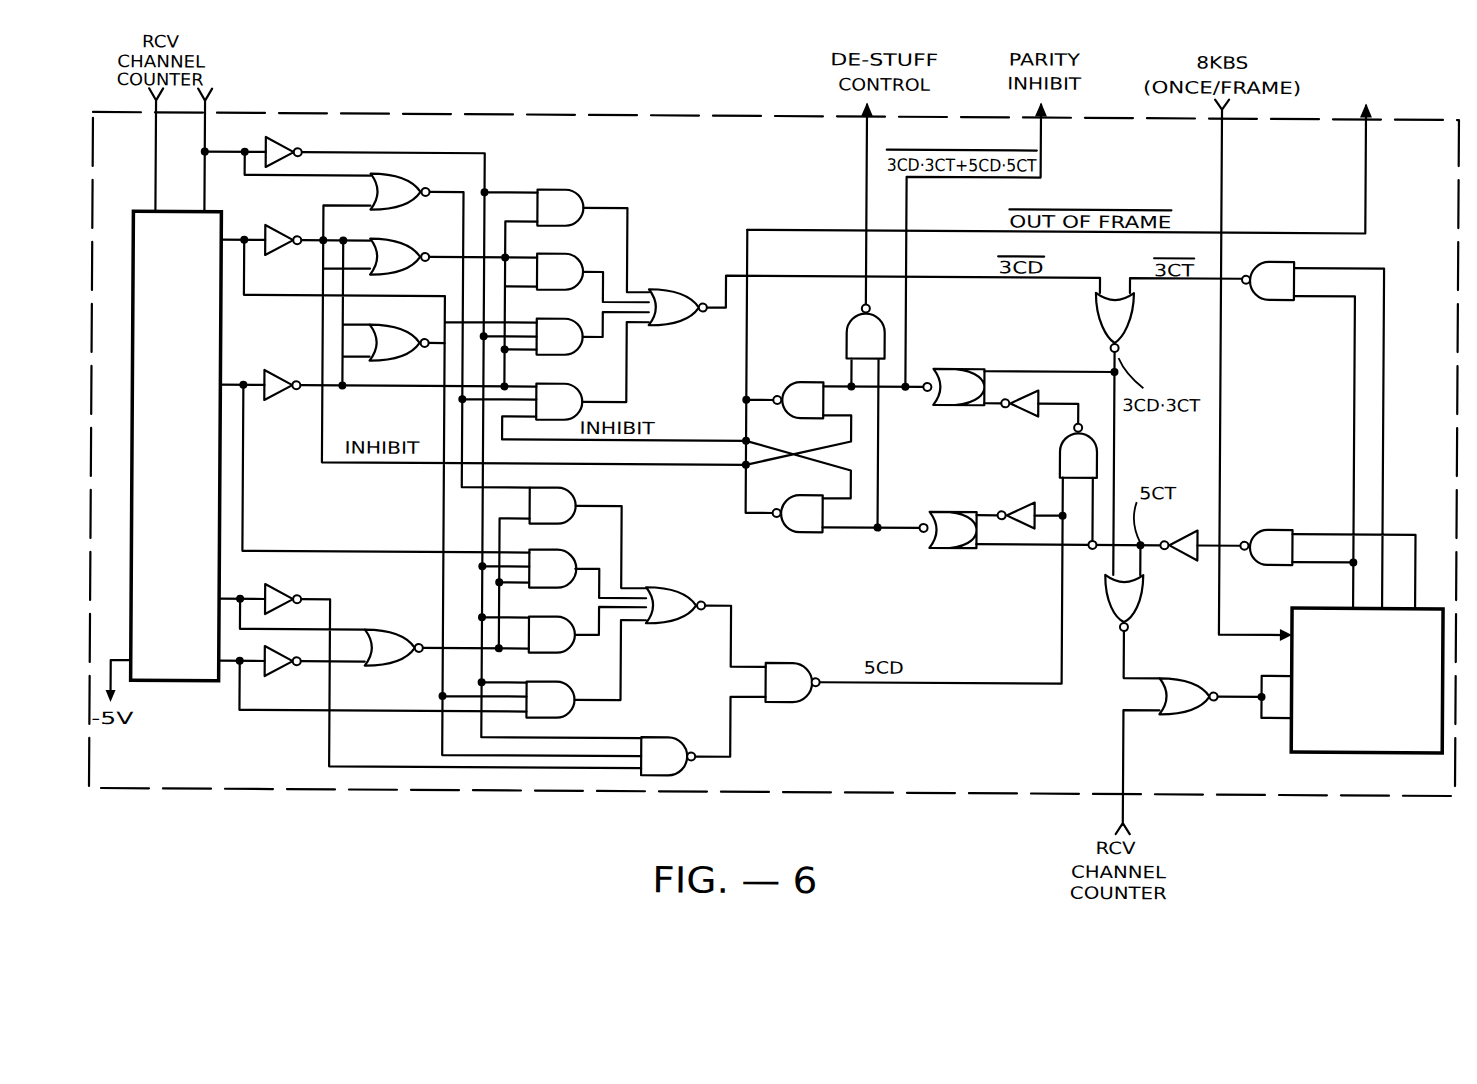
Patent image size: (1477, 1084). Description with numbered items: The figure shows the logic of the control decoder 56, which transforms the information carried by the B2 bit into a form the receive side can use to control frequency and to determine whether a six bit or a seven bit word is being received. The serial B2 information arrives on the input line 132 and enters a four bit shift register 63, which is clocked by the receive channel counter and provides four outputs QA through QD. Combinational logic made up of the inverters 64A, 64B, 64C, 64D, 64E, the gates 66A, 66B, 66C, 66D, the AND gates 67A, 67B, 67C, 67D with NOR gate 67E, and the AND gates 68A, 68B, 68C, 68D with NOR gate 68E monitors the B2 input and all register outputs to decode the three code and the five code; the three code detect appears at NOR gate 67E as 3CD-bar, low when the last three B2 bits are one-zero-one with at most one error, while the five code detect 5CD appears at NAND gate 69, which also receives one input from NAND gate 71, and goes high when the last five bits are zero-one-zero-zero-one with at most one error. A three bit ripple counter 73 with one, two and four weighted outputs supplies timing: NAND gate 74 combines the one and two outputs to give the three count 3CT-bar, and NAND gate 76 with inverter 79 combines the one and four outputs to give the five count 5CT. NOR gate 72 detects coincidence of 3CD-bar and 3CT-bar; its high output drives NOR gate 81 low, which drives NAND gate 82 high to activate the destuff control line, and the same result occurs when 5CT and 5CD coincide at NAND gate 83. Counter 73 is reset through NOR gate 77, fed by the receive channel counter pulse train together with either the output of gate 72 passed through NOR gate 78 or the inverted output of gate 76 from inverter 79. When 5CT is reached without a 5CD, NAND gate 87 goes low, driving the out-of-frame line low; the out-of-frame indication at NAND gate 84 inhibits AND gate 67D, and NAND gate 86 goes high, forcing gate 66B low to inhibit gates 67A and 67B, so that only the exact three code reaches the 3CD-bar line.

The control decoder 56 is at (348, 791).
The four bit shift register 63 is at (183, 684).
The receive channel counter input line 132 is at (205, 129).
The combinational logic inverter 64A is at (279, 138).
The combinational logic inverter 64B is at (270, 228).
The combinational logic inverter 64C is at (270, 372).
The combinational logic inverter 64D is at (275, 579).
The combinational logic inverter 64E is at (272, 678).
The combinational logic gate 66A is at (410, 183).
The combinational logic gate 66B is at (400, 241).
The combinational logic gate 66C is at (385, 327).
The combinational logic gate 66D is at (385, 632).
The AND gate 67A is at (548, 189).
The AND gate 67B is at (553, 254).
The AND gate 67C is at (568, 324).
The AND gate 67D is at (553, 384).
The NOR gate 67E is at (660, 290).
The AND gate 68A is at (563, 488).
The AND gate 68B is at (562, 551).
The AND gate 68C is at (548, 618).
The AND gate 68D is at (547, 683).
The NOR gate 68E is at (690, 587).
The NAND gate 69 is at (777, 663).
The NAND gate 71 is at (681, 738).
The NOR gate 72 is at (1134, 313).
The three bit ripple counter 73 is at (1358, 750).
The NAND gate 74 is at (1275, 298).
The NAND gate 76 is at (1295, 527).
The NOR gate 77 is at (1200, 674).
The NOR gate 78 is at (1108, 608).
The inverter 79 is at (1199, 530).
The NOR gate 81 is at (958, 368).
The NAND gate 82 is at (846, 326).
The NAND gate 83 is at (1060, 460).
The NAND gate 84 is at (812, 381).
The NAND gate 86 is at (793, 533).
The NAND gate 87 is at (950, 548).